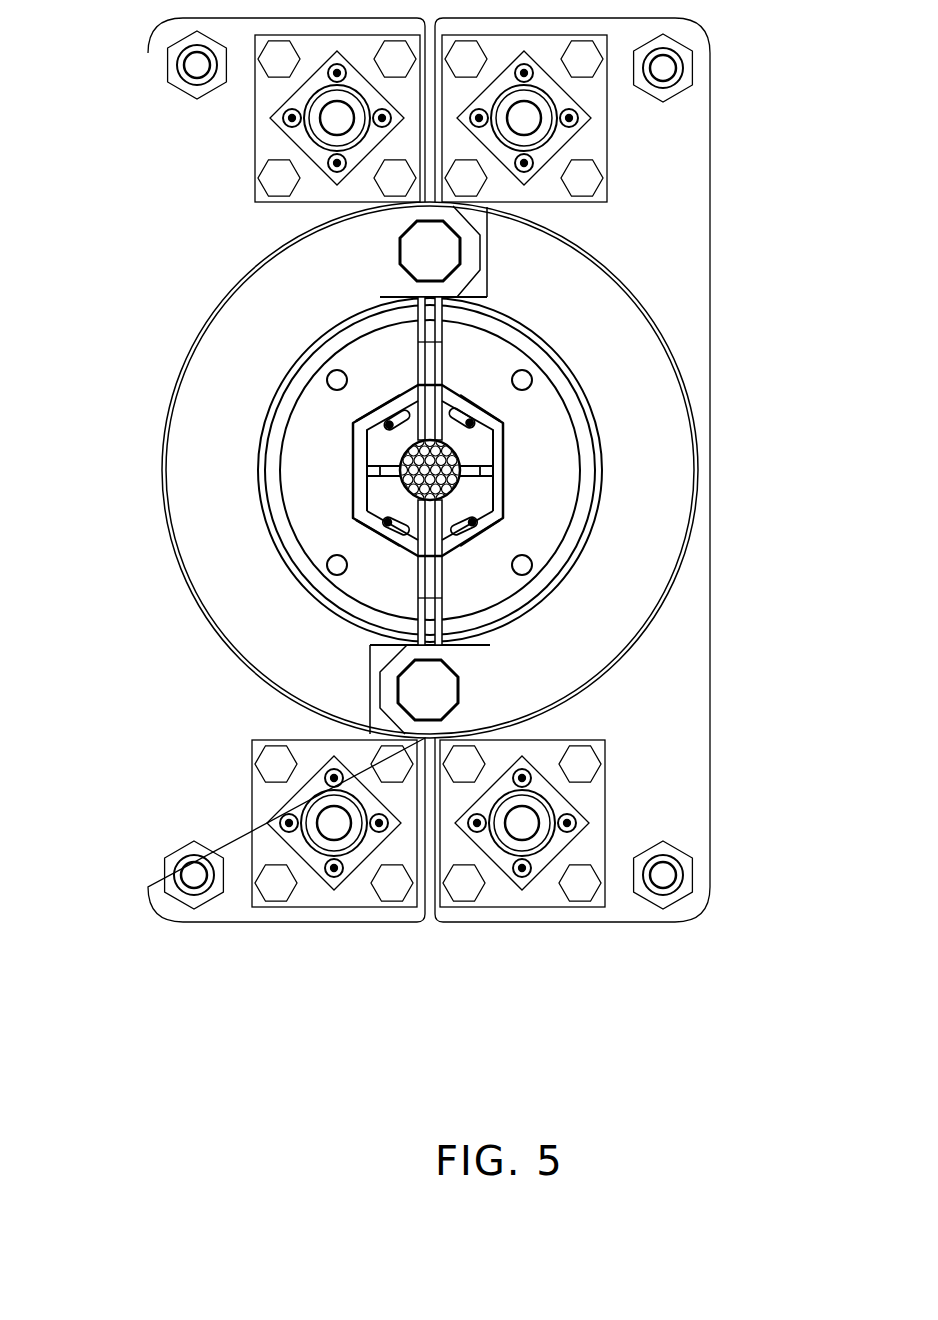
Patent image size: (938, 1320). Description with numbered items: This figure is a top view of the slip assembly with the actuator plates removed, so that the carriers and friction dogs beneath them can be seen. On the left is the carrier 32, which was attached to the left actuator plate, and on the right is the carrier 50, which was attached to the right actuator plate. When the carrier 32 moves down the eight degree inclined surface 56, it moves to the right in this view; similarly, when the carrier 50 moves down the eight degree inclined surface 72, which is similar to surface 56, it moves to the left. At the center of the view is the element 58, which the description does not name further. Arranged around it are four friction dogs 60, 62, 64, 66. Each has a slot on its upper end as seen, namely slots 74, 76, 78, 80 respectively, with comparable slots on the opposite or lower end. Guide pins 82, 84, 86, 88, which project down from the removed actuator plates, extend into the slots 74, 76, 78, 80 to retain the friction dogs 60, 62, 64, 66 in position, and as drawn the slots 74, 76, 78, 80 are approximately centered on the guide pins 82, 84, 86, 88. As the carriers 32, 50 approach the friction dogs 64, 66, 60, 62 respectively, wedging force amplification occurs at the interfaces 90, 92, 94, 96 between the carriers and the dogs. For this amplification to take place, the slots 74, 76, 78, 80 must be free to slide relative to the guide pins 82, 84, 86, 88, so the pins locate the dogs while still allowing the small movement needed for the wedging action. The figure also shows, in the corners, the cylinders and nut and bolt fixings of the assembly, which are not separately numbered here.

The carrier 32 is at (303, 463).
The carrier 50 is at (552, 463).
The eight degree inclined surface 56 is at (257, 478).
The hexagonal collar 58 is at (505, 440).
The friction dog 60 is at (462, 452).
The friction dog 62 is at (470, 492).
The friction dog 64 is at (390, 450).
The friction dog 66 is at (392, 492).
The eight degree inclined surface 72 is at (505, 500).
The slot 74 is at (492, 417).
The slot 76 is at (480, 522).
The slot 78 is at (368, 417).
The slot 80 is at (381, 521).
The guide pin 82 is at (455, 403).
The guide pin 84 is at (448, 527).
The guide pin 86 is at (406, 402).
The guide pin 88 is at (412, 527).
The interface 90 is at (400, 393).
The interface 92 is at (372, 572).
The interface 94 is at (462, 392).
The interface 96 is at (488, 572).